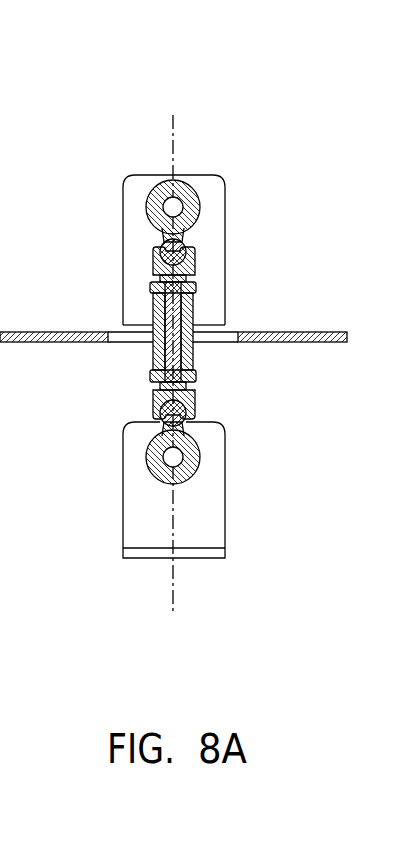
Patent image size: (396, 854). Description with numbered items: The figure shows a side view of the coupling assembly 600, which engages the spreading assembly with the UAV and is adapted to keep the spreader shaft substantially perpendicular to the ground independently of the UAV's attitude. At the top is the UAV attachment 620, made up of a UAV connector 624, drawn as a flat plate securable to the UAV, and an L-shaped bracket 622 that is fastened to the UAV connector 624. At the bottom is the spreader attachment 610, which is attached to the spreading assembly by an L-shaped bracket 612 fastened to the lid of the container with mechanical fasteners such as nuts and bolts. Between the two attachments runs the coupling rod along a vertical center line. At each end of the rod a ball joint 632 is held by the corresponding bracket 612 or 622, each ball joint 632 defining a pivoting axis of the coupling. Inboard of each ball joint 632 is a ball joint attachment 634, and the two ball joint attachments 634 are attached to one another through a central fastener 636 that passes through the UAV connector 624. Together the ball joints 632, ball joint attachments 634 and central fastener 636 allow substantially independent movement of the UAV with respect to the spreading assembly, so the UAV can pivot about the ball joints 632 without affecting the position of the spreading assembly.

The coupling assembly 600 is at (252, 138).
The spreader attachment 610 is at (262, 472).
The L-shaped brackets 612 is at (212, 526).
The UAV attachment 620 is at (262, 296).
The L-shaped brackets 622 is at (130, 200).
The UAV connector 624 is at (335, 331).
The ball joint 632 is at (158, 246).
The ball joint attachment 634 is at (152, 288).
The central fastener 636 is at (155, 355).